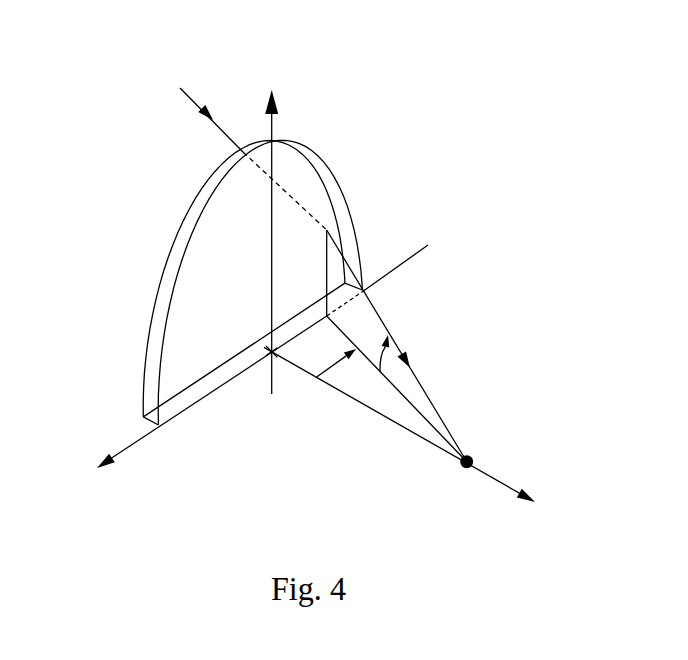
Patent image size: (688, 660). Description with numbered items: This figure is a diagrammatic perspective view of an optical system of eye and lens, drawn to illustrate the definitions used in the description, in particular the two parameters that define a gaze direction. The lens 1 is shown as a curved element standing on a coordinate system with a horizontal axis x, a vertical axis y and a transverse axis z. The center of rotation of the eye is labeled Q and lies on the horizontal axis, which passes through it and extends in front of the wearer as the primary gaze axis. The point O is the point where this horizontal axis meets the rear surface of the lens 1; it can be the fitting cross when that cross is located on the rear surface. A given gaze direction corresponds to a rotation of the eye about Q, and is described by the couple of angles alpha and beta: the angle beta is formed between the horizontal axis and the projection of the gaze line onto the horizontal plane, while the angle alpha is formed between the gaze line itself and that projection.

The mirror (half-disc reflector) 1 is at (157, 283).
The x axis x is at (407, 424).
The y axis y is at (279, 230).
The z axis z is at (262, 368).
The point O is at (262, 371).
The center of rotation of the eye Q is at (480, 452).
The angle α alpha is at (375, 346).
The angle β beta is at (335, 354).